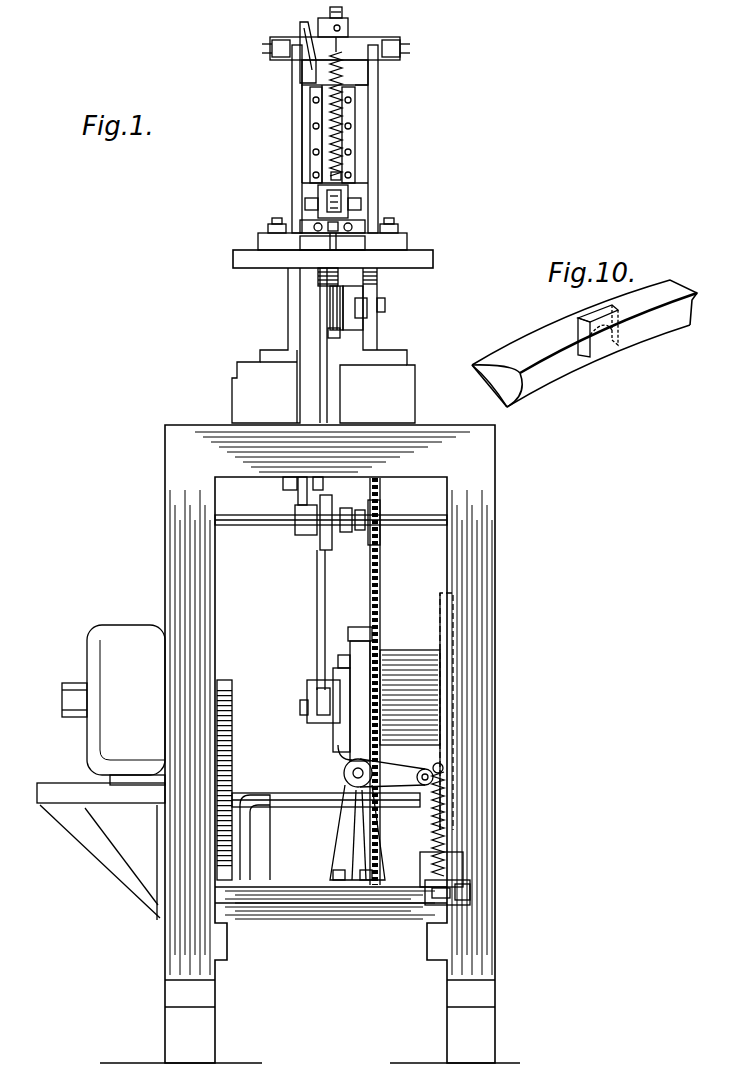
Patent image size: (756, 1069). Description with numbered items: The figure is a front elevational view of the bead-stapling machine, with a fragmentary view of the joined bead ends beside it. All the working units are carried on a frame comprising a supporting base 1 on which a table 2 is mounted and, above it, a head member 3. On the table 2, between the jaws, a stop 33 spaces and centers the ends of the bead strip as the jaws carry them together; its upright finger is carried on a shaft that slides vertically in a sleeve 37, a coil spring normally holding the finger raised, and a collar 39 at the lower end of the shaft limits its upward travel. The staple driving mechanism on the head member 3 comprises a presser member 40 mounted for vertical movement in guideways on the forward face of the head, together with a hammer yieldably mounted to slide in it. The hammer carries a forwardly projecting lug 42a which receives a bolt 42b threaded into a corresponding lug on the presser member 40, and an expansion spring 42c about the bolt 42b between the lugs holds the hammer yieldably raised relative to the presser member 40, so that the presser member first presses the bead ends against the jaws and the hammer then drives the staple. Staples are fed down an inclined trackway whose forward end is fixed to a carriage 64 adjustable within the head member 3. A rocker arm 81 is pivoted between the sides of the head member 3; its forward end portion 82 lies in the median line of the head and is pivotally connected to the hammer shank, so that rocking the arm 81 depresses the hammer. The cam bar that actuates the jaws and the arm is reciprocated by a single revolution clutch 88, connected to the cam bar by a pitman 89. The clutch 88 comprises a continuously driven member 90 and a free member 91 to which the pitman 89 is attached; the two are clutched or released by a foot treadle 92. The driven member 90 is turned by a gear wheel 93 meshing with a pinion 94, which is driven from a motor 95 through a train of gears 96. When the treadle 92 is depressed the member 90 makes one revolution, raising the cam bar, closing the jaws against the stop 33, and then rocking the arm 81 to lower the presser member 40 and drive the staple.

The supporting base 1 is at (497, 690).
The table 2 is at (433, 258).
The head member 3 is at (380, 135).
The stop 33 is at (340, 278).
The sleeve 37 is at (330, 309).
The collar 39 is at (328, 330).
The presser member 40 is at (352, 188).
The forwardly projecting lug 42a is at (335, 44).
The bolt 42b is at (315, 126).
The expansion spring 42c is at (330, 160).
The carriage 64 is at (360, 214).
The rocker arm 81 is at (305, 73).
The forward end portion 82 is at (348, 27).
The single revolution clutch 88 is at (355, 632).
The pitman 89 is at (317, 616).
The continuously driven member 90 is at (381, 632).
The free member 91 is at (315, 690).
The foot treadle 92 is at (430, 898).
The gear wheel 93 is at (443, 622).
The pinion 94 is at (455, 811).
The motor 95 is at (113, 705).
The train of gears 96 is at (234, 764).